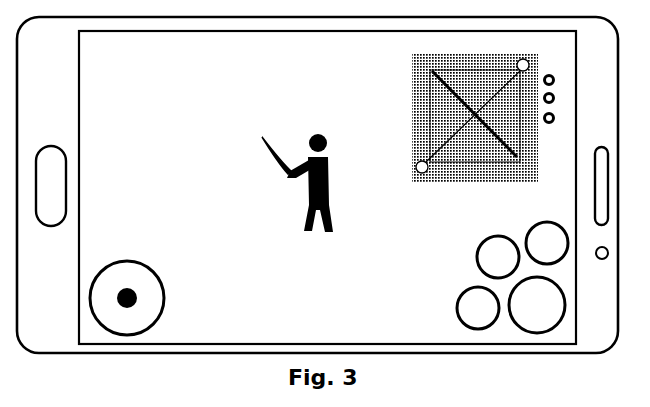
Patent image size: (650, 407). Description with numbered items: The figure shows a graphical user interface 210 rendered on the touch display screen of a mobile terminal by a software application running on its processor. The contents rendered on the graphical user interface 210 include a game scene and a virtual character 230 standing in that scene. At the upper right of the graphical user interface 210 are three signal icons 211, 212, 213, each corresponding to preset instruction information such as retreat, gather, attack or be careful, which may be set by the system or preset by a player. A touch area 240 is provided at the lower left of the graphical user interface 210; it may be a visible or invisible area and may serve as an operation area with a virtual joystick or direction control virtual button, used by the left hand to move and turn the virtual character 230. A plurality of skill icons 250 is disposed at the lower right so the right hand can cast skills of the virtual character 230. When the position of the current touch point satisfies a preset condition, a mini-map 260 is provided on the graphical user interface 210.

The graphical user interface 210 is at (78, 51).
The signal icon 211 is at (553, 76).
The signal icon 212 is at (554, 97).
The signal icon 213 is at (554, 118).
The virtual character 230 is at (307, 148).
The touch area 240 is at (165, 305).
The skill icons 250 is at (478, 265).
The mini-map 260 is at (410, 109).